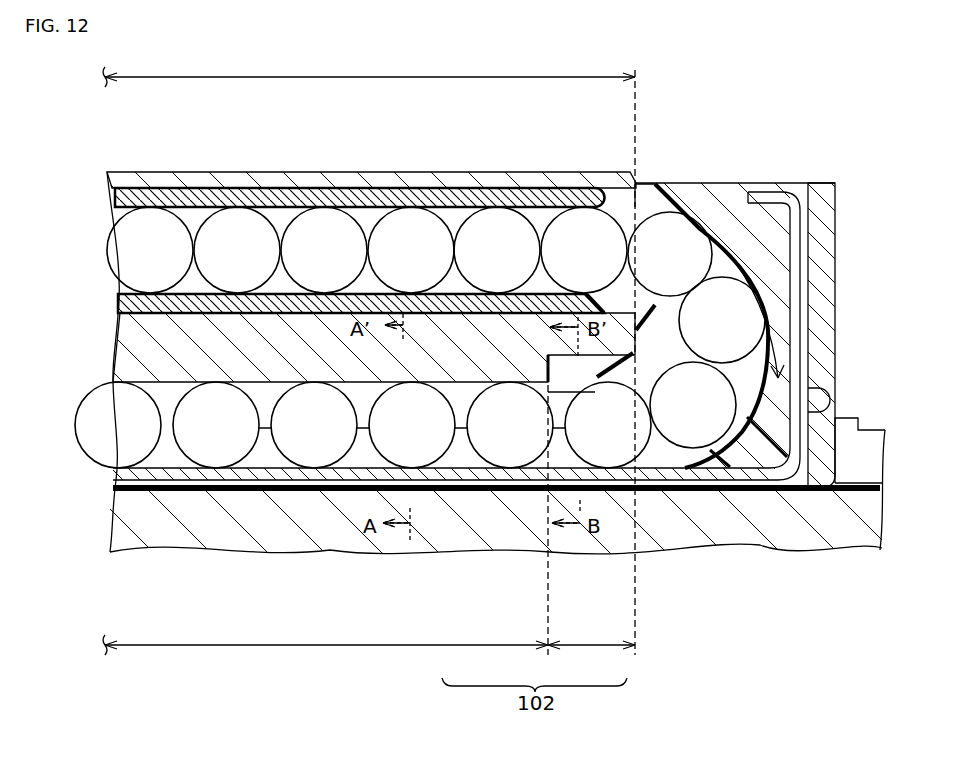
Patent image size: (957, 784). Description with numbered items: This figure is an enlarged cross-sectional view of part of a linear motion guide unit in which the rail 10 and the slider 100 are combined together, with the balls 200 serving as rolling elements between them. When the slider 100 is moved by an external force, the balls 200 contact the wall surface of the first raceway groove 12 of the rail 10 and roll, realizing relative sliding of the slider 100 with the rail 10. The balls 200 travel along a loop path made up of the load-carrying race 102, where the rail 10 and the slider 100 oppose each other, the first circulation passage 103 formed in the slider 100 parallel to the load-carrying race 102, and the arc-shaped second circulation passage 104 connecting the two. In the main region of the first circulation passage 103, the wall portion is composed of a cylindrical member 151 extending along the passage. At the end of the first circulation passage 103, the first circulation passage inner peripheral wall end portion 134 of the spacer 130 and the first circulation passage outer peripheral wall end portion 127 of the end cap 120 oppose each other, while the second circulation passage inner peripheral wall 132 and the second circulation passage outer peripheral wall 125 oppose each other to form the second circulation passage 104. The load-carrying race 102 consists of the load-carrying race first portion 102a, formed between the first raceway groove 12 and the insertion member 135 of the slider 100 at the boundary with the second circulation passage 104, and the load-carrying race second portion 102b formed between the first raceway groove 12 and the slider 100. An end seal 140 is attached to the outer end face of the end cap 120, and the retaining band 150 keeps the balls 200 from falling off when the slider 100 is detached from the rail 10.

The rail 10 is at (135, 516).
The first raceway groove 12 is at (872, 440).
The slider 100 is at (140, 344).
The load-carrying race 102 is at (168, 457).
The load-carrying race first portion 102a is at (591, 659).
The load-carrying race second portion 102b is at (365, 663).
The first circulation passage 103 is at (282, 217).
The second circulation passage 104 is at (738, 271).
The end cap 120 is at (711, 190).
The second circulation passage outer peripheral wall 125 is at (733, 258).
The first circulation passage outer peripheral wall end portion 127 is at (588, 220).
The spacer 130 is at (651, 317).
The second circulation passage inner peripheral wall 132 is at (720, 354).
The first circulation passage inner peripheral wall end portion 134 is at (613, 307).
The insertion member 135 is at (582, 370).
The end seal 140 is at (821, 200).
The retaining band 150 is at (767, 200).
The cylindrical member 151 is at (125, 298).
The balls 200 is at (313, 447).